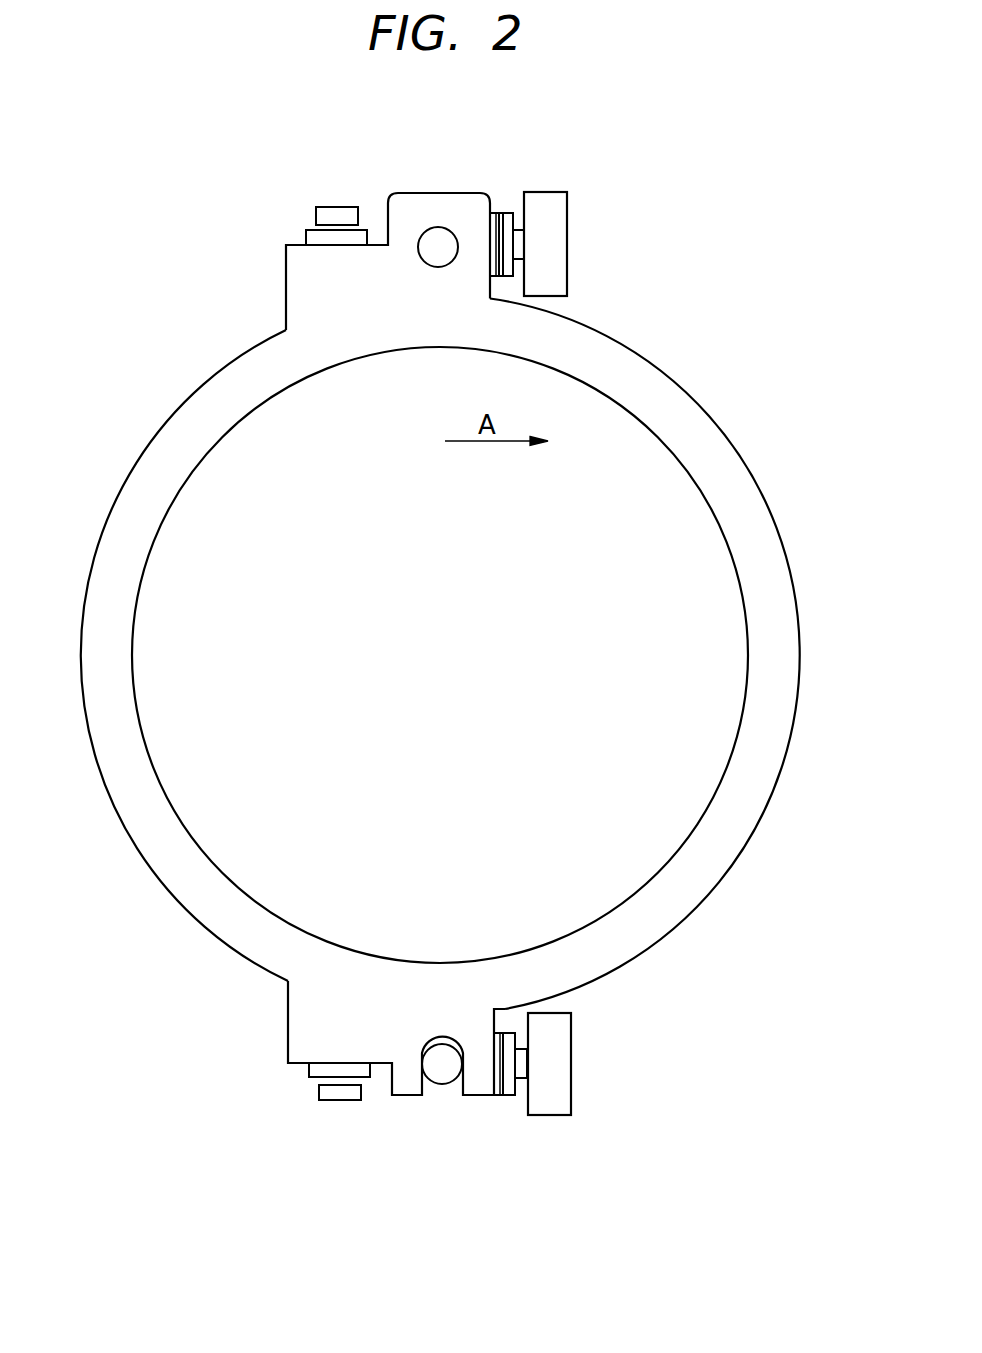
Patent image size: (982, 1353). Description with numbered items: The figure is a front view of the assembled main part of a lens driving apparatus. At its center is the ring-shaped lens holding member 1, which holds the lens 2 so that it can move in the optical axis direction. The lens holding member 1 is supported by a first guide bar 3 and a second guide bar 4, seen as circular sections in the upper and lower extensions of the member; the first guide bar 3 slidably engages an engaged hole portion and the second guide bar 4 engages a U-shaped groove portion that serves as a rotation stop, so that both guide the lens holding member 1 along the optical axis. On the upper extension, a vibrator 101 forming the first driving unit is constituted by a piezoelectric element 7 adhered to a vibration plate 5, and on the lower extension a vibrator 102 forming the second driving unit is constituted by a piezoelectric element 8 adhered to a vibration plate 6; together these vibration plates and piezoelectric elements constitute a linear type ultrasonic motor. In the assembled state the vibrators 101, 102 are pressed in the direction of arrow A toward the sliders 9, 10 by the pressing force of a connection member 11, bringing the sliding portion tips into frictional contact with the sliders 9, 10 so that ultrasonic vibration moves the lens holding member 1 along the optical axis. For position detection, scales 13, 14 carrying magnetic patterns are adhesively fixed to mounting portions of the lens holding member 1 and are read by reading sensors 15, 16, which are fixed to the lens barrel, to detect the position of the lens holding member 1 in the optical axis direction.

The lens holding member 1 is at (137, 497).
The lens 2 is at (218, 464).
The first guide bar 3 is at (432, 226).
The second guide bar 4 is at (434, 1087).
The vibration plate 5 is at (508, 213).
The vibration plate 6 is at (509, 1096).
The piezoelectric element 7 is at (497, 213).
The piezoelectric element 8 is at (500, 1096).
The slider 9 is at (560, 192).
The slider 10 is at (563, 1116).
The connection member 11 is at (490, 228).
The scale 13 is at (310, 229).
The scale 14 is at (313, 1078).
The reading sensor 15 is at (341, 207).
The reading sensor 16 is at (341, 1103).
The vibrator 101 is at (483, 139).
The vibrator 102 is at (550, 1168).